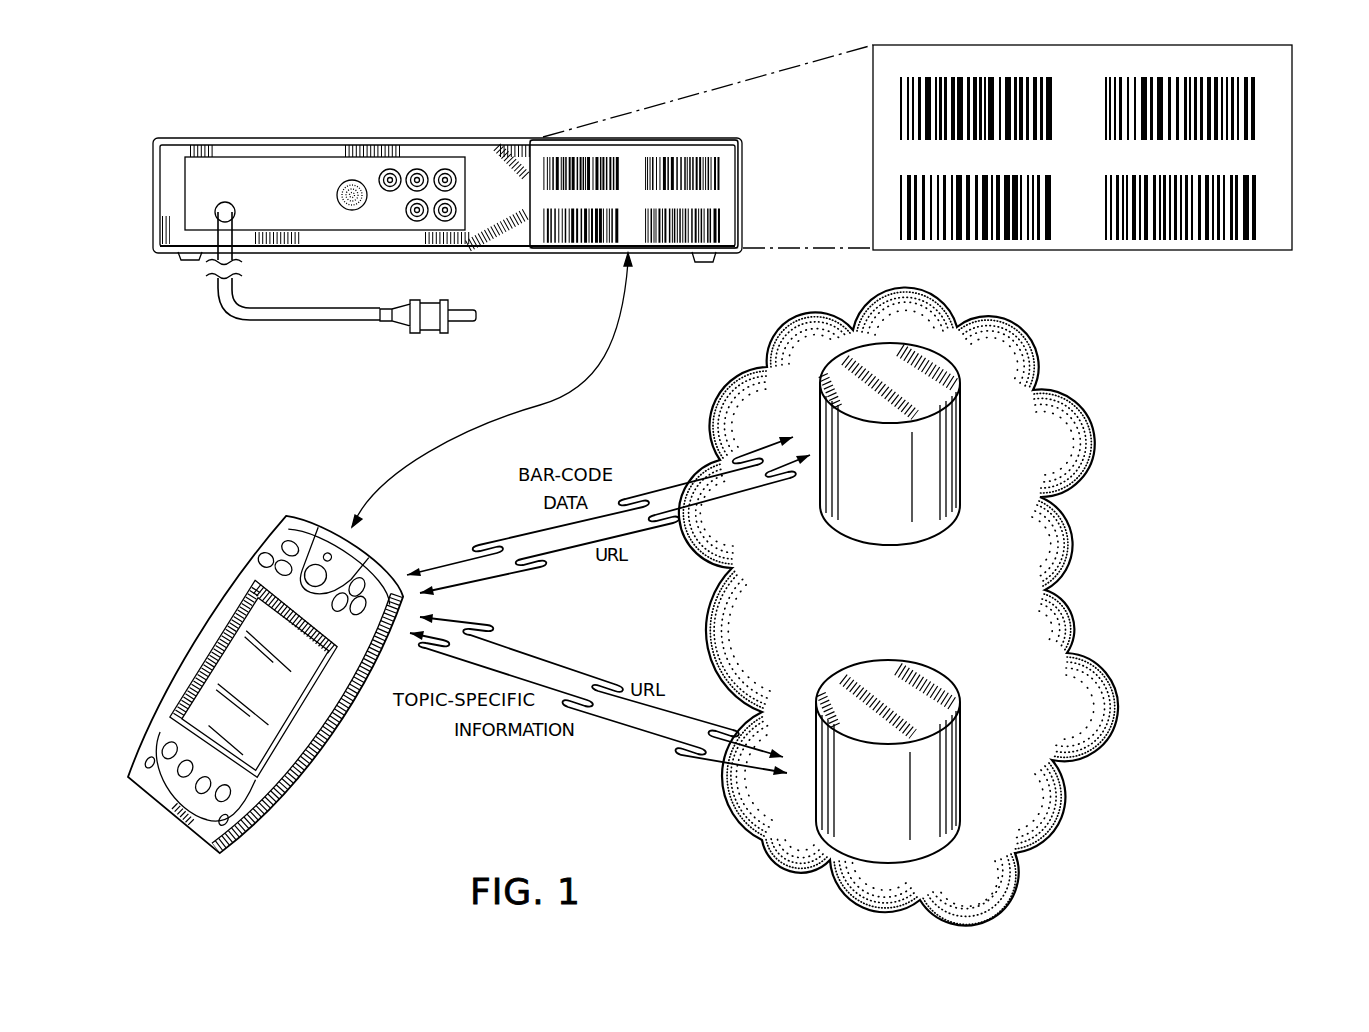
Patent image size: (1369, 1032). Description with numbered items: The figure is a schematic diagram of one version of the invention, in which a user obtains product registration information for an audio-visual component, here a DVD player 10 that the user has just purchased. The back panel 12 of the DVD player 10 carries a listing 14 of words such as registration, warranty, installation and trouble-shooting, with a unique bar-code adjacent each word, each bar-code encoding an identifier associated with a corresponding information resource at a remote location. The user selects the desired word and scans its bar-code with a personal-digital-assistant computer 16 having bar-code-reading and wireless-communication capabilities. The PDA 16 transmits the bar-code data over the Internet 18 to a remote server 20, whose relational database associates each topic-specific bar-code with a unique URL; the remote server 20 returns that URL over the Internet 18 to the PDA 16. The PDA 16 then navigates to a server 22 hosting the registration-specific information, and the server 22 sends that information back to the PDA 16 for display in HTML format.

The DVD player 10 is at (147, 120).
The back panel 12 is at (504, 214).
The listing 14 is at (1314, 158).
The personal-digital-assistant computer 16 is at (333, 770).
The Internet 18 is at (1108, 592).
The remote server 20 is at (884, 500).
The server 22 is at (884, 812).